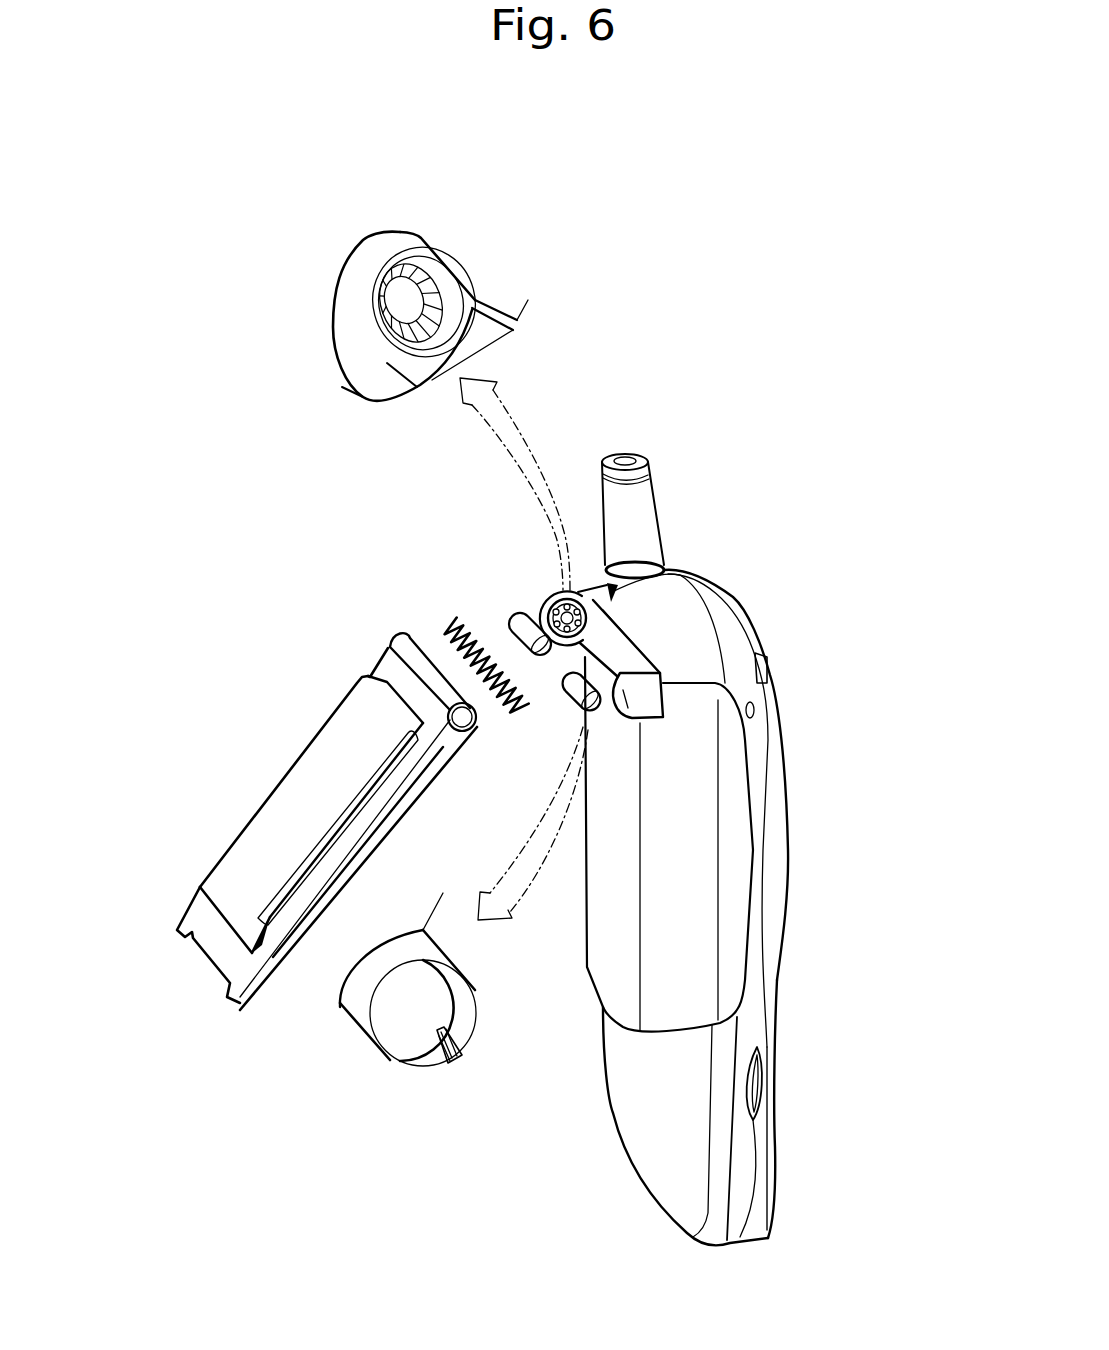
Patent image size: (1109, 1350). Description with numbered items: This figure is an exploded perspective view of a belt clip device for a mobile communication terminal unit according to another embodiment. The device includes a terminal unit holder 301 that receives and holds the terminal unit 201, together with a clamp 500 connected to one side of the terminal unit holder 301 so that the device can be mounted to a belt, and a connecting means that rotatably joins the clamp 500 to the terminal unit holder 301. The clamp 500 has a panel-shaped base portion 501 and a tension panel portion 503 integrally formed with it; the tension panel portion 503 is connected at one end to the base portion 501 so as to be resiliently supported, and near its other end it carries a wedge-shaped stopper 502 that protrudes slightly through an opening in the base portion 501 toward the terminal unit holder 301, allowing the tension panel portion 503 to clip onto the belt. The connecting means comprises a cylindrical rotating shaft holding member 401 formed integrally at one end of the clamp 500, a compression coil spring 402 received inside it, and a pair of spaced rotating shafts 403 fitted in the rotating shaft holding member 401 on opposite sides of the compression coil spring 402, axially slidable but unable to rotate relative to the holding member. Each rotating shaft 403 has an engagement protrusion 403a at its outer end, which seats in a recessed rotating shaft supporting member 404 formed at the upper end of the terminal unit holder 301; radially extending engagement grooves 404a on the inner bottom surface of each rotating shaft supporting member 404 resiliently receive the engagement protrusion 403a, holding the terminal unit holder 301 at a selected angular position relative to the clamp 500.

The terminal unit 201 is at (670, 1133).
The terminal unit holder 301 is at (693, 838).
The rotating shaft holding member 401 is at (403, 642).
The compression coil spring 402 is at (460, 620).
The rotating shaft 403 is at (567, 700).
The engagement protrusion 403a is at (458, 1057).
The rotating shaft supporting member 404 is at (423, 244).
The engagement groove 404a is at (447, 288).
The clamp 500 is at (261, 842).
The base portion 501 is at (200, 915).
The wedge-shaped stopper 502 is at (280, 940).
The tension panel portion 503 is at (337, 725).